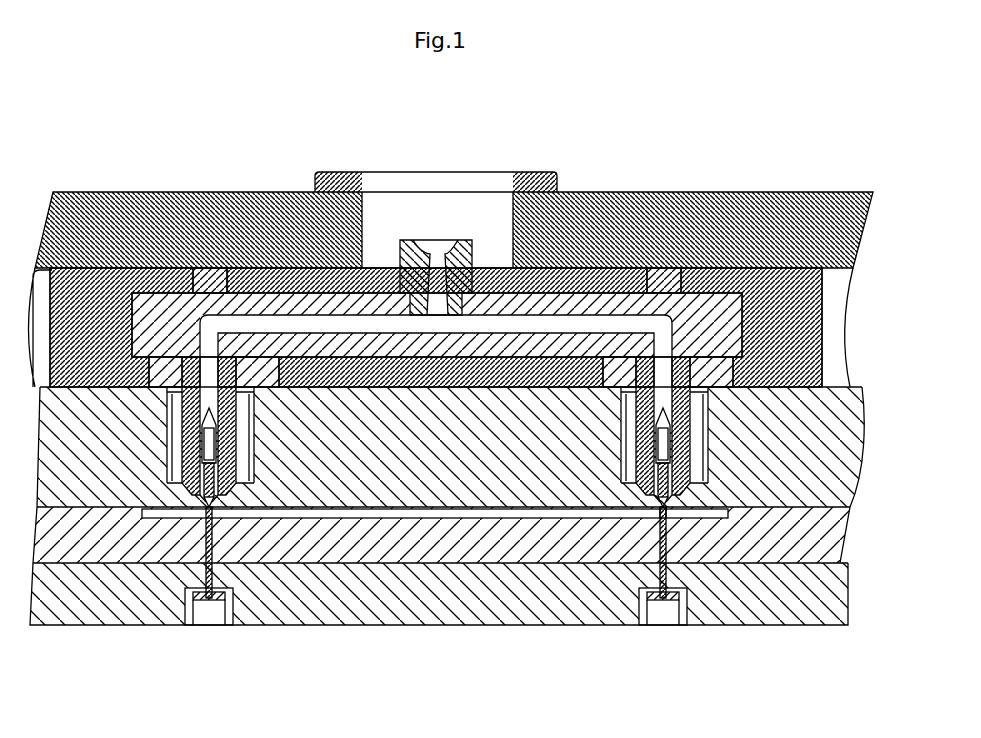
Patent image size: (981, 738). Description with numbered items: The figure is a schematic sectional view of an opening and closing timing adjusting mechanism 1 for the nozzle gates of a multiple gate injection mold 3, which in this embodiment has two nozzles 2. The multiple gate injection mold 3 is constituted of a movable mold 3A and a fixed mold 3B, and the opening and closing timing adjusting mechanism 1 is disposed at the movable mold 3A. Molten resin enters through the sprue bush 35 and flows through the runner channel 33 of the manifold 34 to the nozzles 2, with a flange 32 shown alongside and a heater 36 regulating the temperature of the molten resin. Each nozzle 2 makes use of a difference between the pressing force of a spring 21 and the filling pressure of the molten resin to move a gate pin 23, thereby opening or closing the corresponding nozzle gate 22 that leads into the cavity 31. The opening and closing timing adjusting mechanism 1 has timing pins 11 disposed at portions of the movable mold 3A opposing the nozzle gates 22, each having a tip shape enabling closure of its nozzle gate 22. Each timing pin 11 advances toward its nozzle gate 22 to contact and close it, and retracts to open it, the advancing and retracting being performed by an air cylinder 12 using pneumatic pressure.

The opening and closing timing adjusting mechanism 1 is at (228, 635).
The nozzle 2 is at (208, 318).
The multiple gate injection mold 3 is at (485, 475).
The movable mold 3A is at (464, 535).
The fixed mold 3B is at (832, 467).
The timing pin 11 is at (214, 550).
The air cylinder 12 is at (204, 600).
The spring 21 is at (672, 442).
The nozzle gate 22 is at (663, 508).
The gate pin 23 is at (206, 495).
The cavity 31 is at (420, 512).
The flange 32 is at (823, 333).
The runner channel 33 is at (258, 327).
The manifold 34 is at (735, 192).
The sprue bush 35 is at (465, 240).
The heater 36 is at (177, 452).